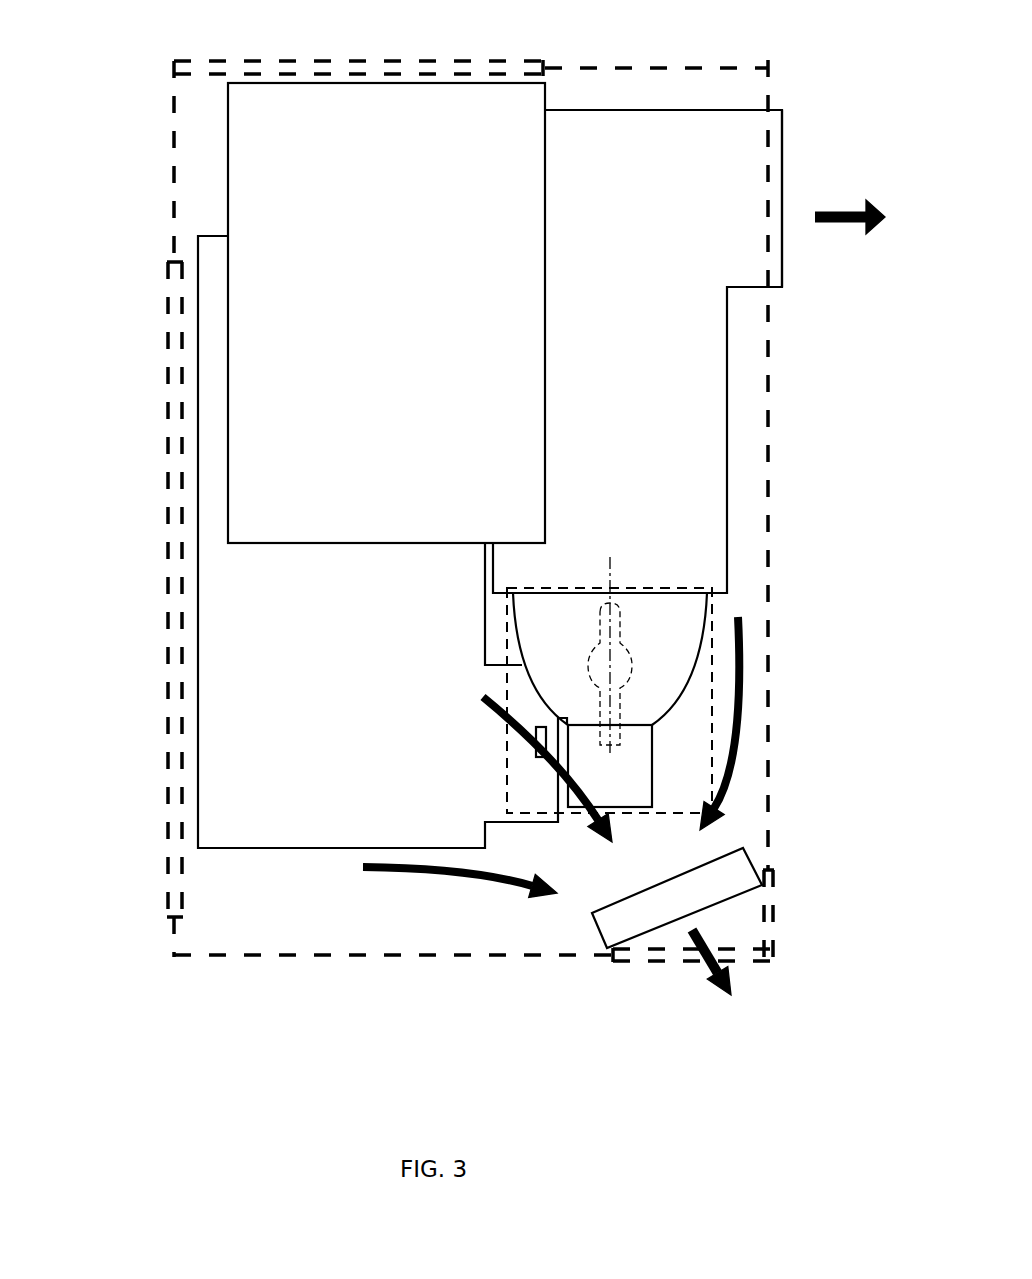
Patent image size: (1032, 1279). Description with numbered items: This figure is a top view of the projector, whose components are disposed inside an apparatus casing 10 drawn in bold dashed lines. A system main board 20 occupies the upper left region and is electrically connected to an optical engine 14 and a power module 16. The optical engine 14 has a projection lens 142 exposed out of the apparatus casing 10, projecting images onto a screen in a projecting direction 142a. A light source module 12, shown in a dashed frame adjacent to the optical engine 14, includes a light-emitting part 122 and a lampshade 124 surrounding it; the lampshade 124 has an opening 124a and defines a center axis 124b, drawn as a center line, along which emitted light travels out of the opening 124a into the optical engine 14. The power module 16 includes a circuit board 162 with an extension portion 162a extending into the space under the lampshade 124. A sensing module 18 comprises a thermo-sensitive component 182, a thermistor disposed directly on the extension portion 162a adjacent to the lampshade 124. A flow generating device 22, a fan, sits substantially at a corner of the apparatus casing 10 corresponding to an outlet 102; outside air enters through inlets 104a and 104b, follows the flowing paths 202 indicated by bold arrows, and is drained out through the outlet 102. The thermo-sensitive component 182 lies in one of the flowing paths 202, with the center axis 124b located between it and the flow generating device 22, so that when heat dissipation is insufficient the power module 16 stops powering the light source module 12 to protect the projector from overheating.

The apparatus casing 10 is at (720, 67).
The outlet 102 is at (657, 955).
The inlet 104a is at (395, 66).
The inlet 104b is at (172, 410).
The light source module 12 is at (677, 666).
The light-emitting part 122 is at (621, 628).
The lampshade 124 is at (694, 664).
The opening 124a is at (676, 591).
The center axis 124b is at (617, 553).
The optical engine 14 is at (748, 380).
The projection lens 142 is at (773, 151).
The projecting direction 142a is at (837, 227).
The power module 16 is at (232, 820).
The circuit board 162 is at (306, 542).
The extension portion 162a is at (535, 822).
The sensing module 18 is at (535, 745).
The thermo-sensitive component 182 is at (463, 749).
The system main board 20 is at (290, 97).
The flowing paths 202 is at (500, 704).
The flow generating device 22 is at (742, 866).